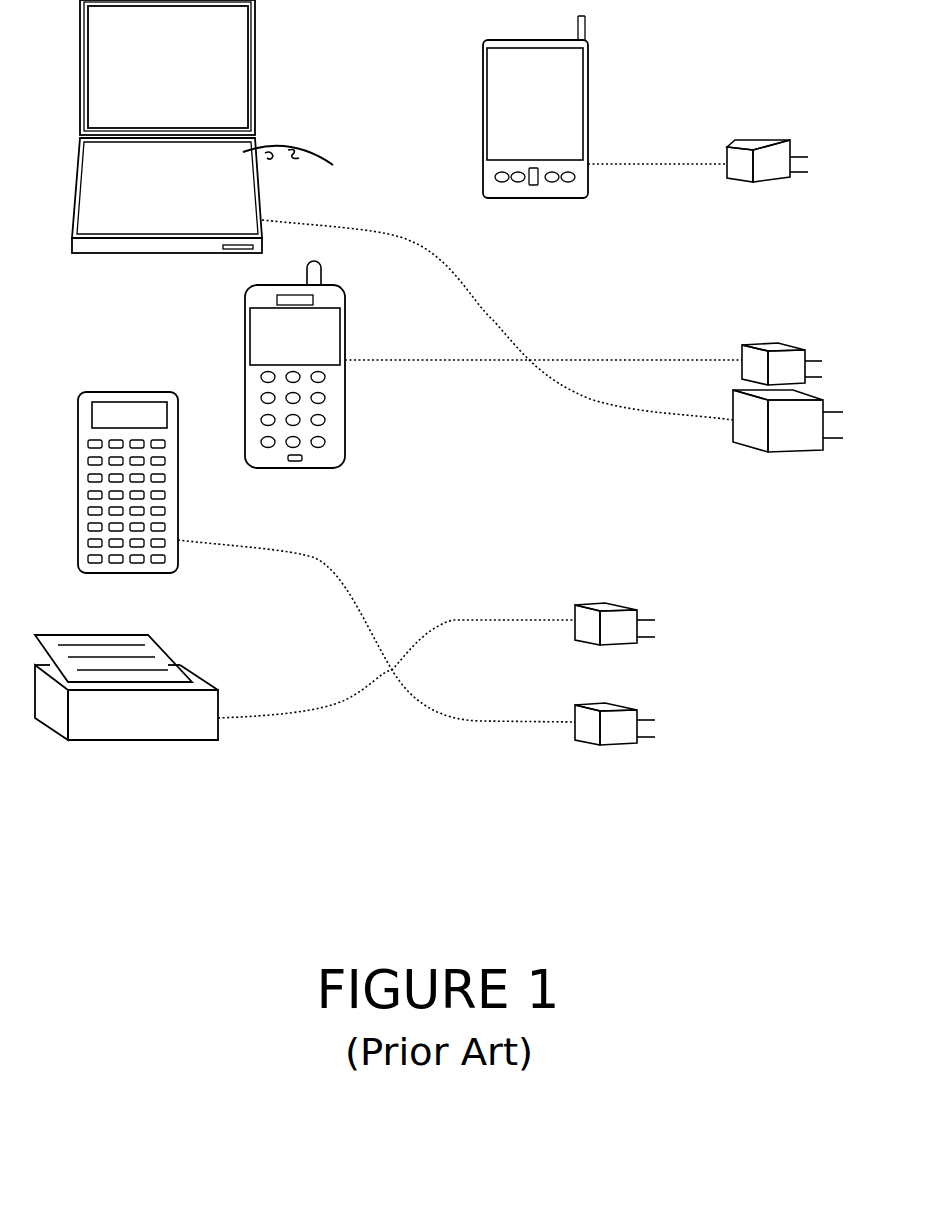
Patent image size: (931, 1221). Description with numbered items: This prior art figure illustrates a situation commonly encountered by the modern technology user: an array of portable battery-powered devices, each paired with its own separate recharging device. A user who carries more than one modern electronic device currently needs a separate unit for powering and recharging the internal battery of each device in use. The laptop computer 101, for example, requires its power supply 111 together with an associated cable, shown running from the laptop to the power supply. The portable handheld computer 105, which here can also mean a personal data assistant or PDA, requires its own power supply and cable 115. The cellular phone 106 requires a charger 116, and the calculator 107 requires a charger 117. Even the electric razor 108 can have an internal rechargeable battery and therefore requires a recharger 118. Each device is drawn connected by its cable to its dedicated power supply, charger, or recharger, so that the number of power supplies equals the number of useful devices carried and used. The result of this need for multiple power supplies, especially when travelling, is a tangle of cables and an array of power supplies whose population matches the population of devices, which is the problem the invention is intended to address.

The laptop computer 101 is at (154, 79).
The portable handheld computer 105 is at (520, 127).
The cellular phone 106 is at (280, 360).
The calculator 107 is at (115, 424).
The electric razor 108 is at (128, 726).
The power supply 111 is at (790, 452).
The power supply and cable 115 is at (752, 140).
The charger 116 is at (768, 345).
The charger 117 is at (615, 745).
The recharger 118 is at (600, 605).